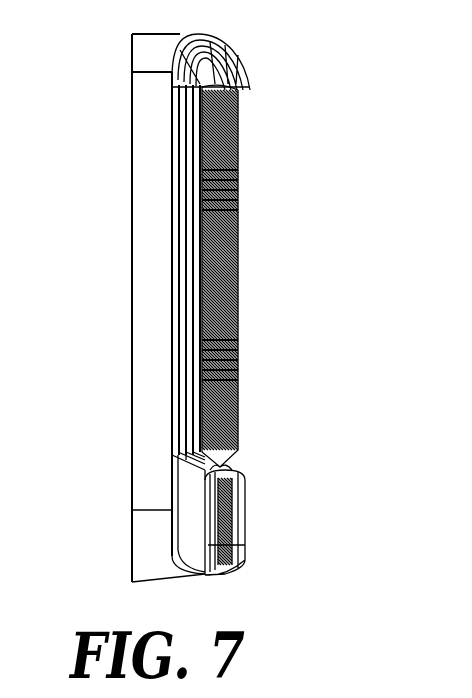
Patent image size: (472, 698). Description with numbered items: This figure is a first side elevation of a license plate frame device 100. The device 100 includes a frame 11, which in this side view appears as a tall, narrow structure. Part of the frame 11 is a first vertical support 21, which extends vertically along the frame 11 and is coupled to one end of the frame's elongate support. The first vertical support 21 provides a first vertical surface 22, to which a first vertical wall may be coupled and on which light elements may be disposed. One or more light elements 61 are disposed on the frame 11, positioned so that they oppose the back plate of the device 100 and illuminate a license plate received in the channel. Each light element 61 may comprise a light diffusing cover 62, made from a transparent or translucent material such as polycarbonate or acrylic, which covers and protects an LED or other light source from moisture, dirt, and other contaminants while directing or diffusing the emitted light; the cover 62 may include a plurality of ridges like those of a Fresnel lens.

The license plate frame device 100 is at (80, 76).
The frame 11 is at (135, 549).
The first vertical support 21 is at (153, 287).
The first vertical surface 22 is at (198, 520).
The light element 61 is at (247, 193).
The light diffusing cover 62 is at (223, 288).